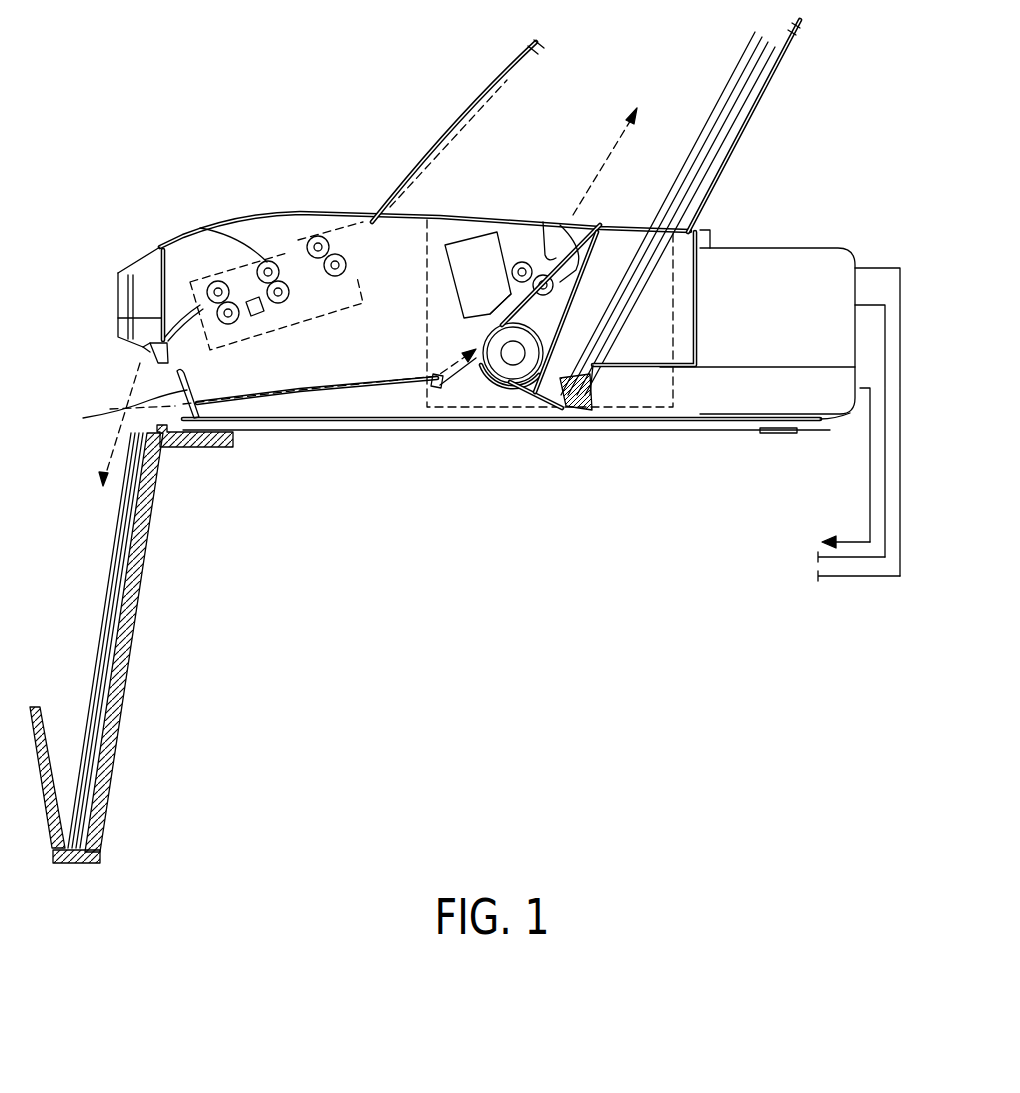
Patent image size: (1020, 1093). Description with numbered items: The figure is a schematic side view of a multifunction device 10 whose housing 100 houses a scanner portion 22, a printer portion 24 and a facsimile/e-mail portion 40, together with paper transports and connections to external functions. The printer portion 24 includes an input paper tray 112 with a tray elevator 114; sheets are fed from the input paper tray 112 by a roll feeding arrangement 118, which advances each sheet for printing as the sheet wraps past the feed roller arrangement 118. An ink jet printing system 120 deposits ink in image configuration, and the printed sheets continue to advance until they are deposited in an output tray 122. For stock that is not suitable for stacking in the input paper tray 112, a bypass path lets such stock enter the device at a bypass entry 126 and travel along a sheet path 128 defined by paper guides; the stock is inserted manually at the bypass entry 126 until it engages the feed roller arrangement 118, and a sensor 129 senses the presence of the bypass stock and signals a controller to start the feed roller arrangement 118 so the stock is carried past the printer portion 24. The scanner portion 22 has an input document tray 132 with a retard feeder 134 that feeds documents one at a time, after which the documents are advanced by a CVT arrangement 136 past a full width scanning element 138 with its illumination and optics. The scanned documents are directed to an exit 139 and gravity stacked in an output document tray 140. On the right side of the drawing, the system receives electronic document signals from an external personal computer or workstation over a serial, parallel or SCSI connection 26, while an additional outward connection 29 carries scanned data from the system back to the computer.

The multifunction device 10 is at (340, 456).
The scanner portion 22 is at (288, 216).
The printer portion 24 is at (427, 327).
The serial, parallel or SCSI connection 26 is at (860, 558).
The outward connection 29 is at (870, 497).
The facsimile/e-mail portion 40 is at (828, 577).
The housing 100 is at (760, 248).
The input paper tray 112 is at (600, 337).
The tray elevator 114 is at (567, 413).
The roll feeding arrangement 118 is at (513, 355).
The ink jet printing system 120 is at (490, 235).
The output tray 122 is at (543, 222).
The bypass entry 126 is at (120, 424).
The sheet path 128 is at (318, 374).
The sensor 129 is at (437, 395).
The input document tray 132 is at (503, 108).
The retard feeder 134 is at (346, 268).
The CVT arrangement 136 is at (217, 280).
The full width scanning element 138 is at (257, 318).
The exit 139 is at (143, 350).
The output document tray 140 is at (137, 635).